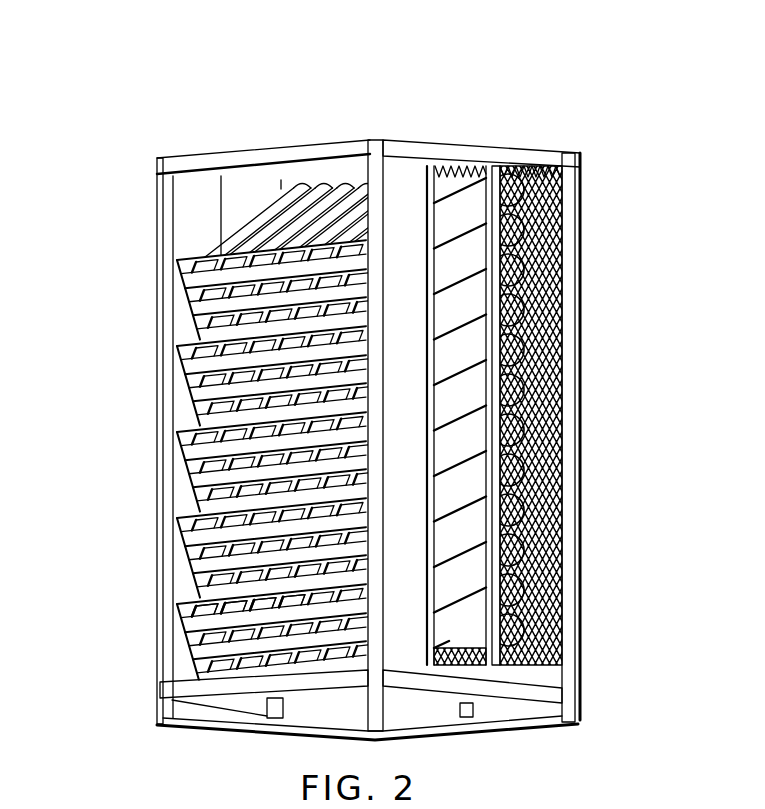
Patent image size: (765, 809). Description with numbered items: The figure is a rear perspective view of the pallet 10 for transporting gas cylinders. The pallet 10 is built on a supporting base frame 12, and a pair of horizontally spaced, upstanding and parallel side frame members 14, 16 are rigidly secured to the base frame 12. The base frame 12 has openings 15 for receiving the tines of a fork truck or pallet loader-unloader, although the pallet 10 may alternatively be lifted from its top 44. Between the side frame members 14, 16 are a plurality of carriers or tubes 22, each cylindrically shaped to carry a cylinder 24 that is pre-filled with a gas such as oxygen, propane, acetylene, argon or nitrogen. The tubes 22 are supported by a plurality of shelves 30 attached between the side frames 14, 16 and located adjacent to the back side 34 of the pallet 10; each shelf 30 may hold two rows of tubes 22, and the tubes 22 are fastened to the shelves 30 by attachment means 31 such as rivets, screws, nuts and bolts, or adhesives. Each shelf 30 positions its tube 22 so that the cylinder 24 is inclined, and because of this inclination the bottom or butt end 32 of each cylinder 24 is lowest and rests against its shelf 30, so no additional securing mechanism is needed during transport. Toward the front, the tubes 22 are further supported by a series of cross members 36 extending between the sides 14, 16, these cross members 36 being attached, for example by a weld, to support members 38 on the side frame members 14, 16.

The pallet 10 is at (326, 82).
The supporting base frame 12 is at (552, 690).
The side frame member 14 is at (200, 192).
The openings 15 is at (214, 710).
The side frame member 16 is at (400, 164).
The tubes 22 is at (532, 158).
The cylinder 24 is at (538, 298).
The shelves 30 is at (200, 296).
The attachment means 31 is at (260, 612).
The bottom end of cylinder 32 is at (198, 250).
The back side 34 is at (238, 188).
The cross members 36 is at (500, 377).
The support members 38 is at (508, 592).
The top 44 is at (468, 146).